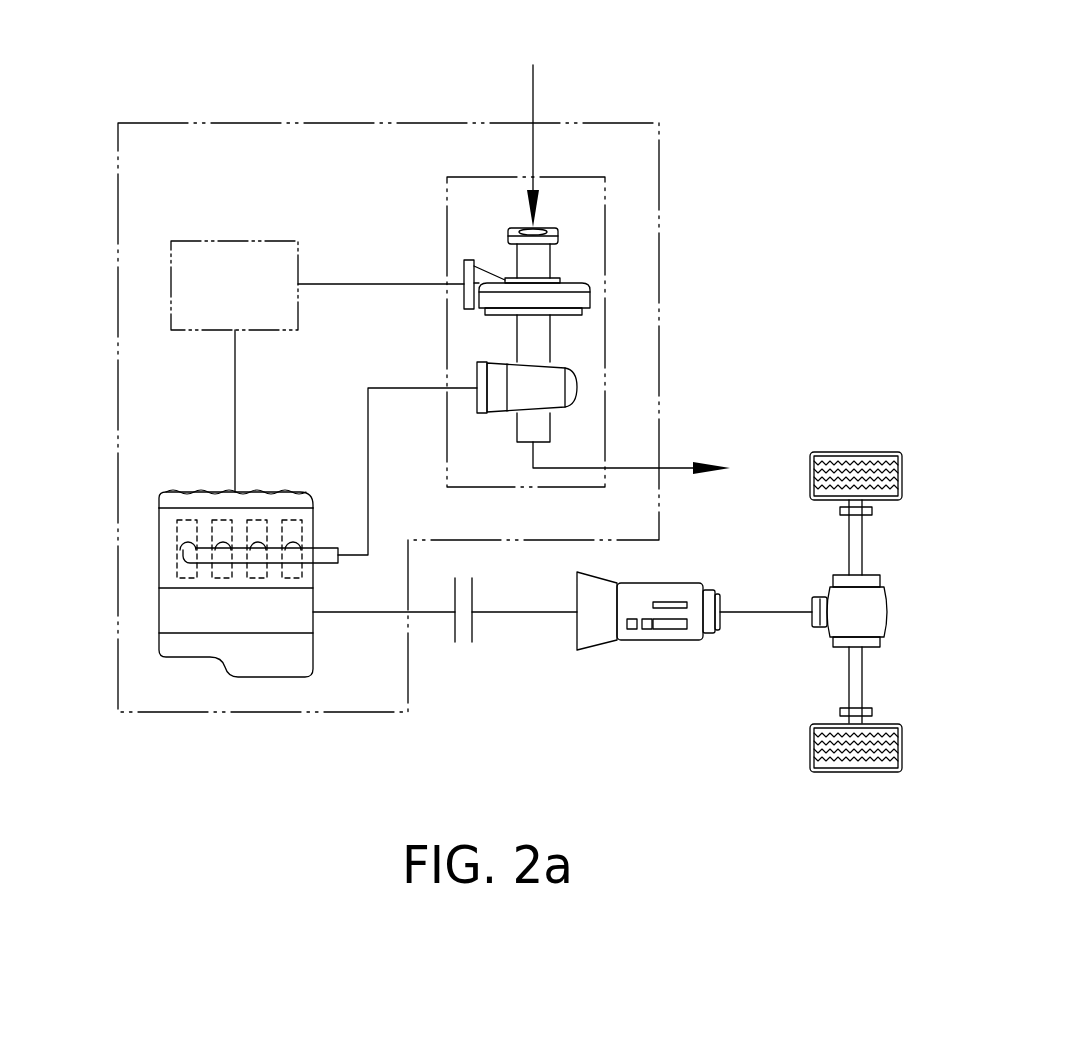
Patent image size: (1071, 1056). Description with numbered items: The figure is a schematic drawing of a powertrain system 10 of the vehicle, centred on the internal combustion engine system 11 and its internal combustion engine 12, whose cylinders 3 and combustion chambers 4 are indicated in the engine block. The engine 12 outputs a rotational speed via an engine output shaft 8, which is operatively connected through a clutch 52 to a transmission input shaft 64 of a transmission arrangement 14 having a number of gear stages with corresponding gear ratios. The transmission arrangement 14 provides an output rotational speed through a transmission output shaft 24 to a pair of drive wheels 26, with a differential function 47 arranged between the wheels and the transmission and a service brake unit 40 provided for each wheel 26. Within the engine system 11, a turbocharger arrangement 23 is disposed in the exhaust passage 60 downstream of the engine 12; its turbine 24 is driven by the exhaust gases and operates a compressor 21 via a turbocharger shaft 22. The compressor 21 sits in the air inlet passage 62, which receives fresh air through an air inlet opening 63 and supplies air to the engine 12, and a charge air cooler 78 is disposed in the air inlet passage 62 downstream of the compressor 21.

The powertrain system 10 is at (765, 85).
The internal combustion engine system 11 is at (207, 123).
The charge air cooler 78 is at (273, 241).
The air inlet passage 62 is at (233, 411).
The cylinder 3 is at (184, 583).
The combustion chamber 4 is at (184, 583).
The internal combustion engine 12 is at (157, 598).
The exhaust passage 60 is at (412, 388).
The air inlet opening 63 is at (535, 90).
The turbocharger arrangement 23 is at (605, 253).
The compressor 21 is at (590, 300).
The turbocharger shaft 22 is at (551, 342).
The turbine / transmission output shaft 24 is at (577, 388).
The engine output shaft 8 is at (343, 612).
The clutch 52 is at (462, 646).
The transmission input shaft 64 is at (527, 612).
The transmission arrangement 14 is at (657, 640).
The differential function 47 is at (855, 616).
The service brake unit 40 is at (872, 511).
The drive wheels 26 is at (858, 452).